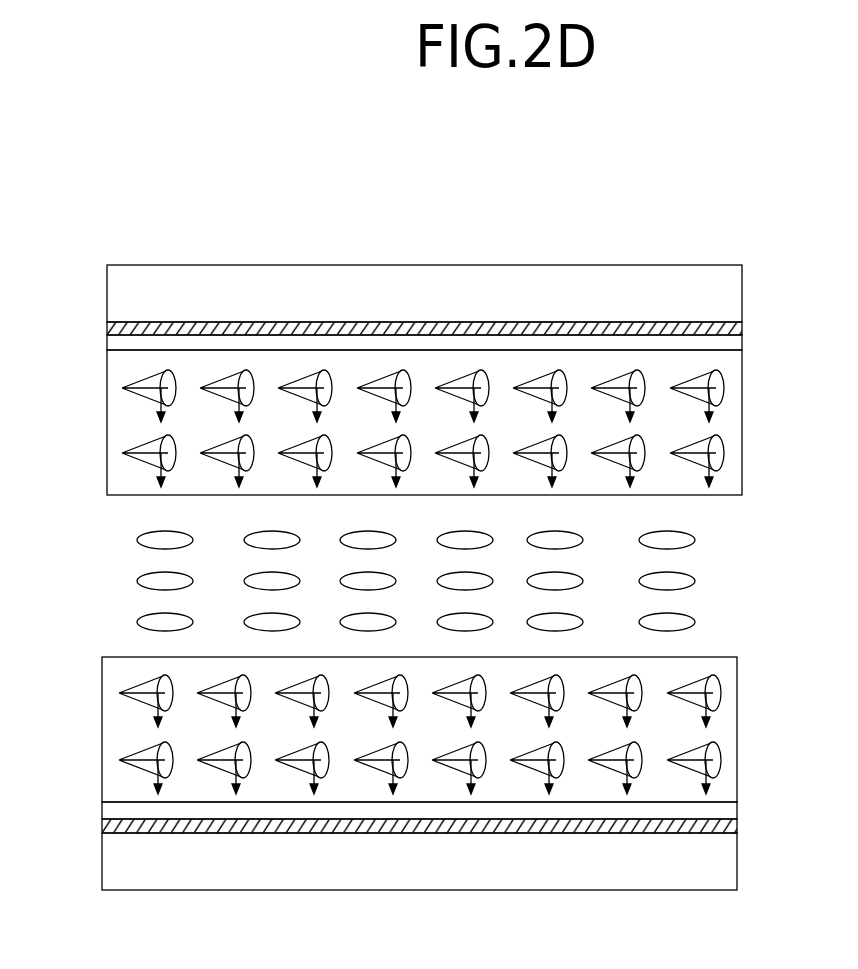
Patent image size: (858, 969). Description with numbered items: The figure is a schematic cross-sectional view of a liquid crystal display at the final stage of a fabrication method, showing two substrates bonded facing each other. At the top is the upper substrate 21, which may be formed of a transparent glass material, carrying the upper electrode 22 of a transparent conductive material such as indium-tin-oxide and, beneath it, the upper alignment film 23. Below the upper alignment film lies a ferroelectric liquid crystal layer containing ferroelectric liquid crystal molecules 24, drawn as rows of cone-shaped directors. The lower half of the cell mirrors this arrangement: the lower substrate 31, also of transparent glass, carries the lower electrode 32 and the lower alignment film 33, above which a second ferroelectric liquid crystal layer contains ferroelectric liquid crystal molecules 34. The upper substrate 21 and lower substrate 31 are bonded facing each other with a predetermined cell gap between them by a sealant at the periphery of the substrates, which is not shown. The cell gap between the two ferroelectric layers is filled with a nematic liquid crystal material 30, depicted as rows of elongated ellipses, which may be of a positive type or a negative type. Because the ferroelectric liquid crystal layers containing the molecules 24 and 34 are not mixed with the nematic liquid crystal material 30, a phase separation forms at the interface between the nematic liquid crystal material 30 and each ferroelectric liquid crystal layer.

The upper substrate 21 is at (742, 286).
The upper electrode 22 is at (742, 331).
The upper alignment film 23 is at (742, 345).
The ferroelectric liquid crystal molecules 24 is at (145, 452).
The nematic liquid crystal material 30 is at (695, 540).
The lower substrate 31 is at (737, 862).
The lower electrode 32 is at (737, 828).
The lower alignment film 33 is at (737, 812).
The ferroelectric liquid crystal molecules 34 is at (696, 696).